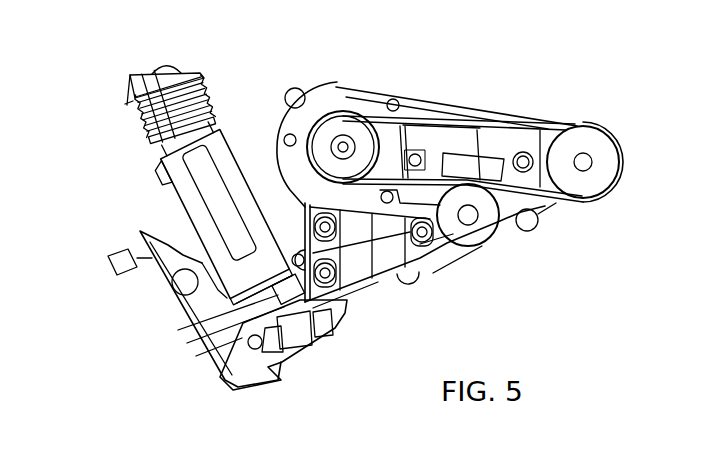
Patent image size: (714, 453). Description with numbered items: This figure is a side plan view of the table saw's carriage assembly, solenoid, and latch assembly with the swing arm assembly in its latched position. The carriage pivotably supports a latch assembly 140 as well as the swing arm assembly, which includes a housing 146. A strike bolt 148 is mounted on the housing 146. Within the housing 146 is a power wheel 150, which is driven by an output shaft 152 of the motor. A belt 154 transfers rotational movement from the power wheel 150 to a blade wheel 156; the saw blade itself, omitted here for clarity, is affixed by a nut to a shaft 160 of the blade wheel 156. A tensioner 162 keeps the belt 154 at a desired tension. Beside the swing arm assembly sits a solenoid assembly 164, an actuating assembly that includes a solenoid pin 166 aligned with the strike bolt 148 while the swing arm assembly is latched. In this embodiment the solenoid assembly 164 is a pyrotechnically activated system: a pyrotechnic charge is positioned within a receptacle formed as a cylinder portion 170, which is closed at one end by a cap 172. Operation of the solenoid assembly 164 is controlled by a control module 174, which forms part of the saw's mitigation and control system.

The latch assembly 140 is at (148, 287).
The housing 146 is at (441, 263).
The strike bolt 148 is at (340, 322).
The power wheel 150 is at (577, 122).
The output shaft 152 is at (586, 158).
The belt 154 is at (440, 100).
The blade wheel 156 is at (374, 118).
The shaft 160 is at (341, 140).
The tensioner 162 is at (508, 224).
The solenoid assembly 164 is at (101, 146).
The solenoid pin 166 is at (224, 380).
The cylinder portion 170 is at (233, 138).
The cap 172 is at (172, 66).
The control module 174 is at (171, 175).